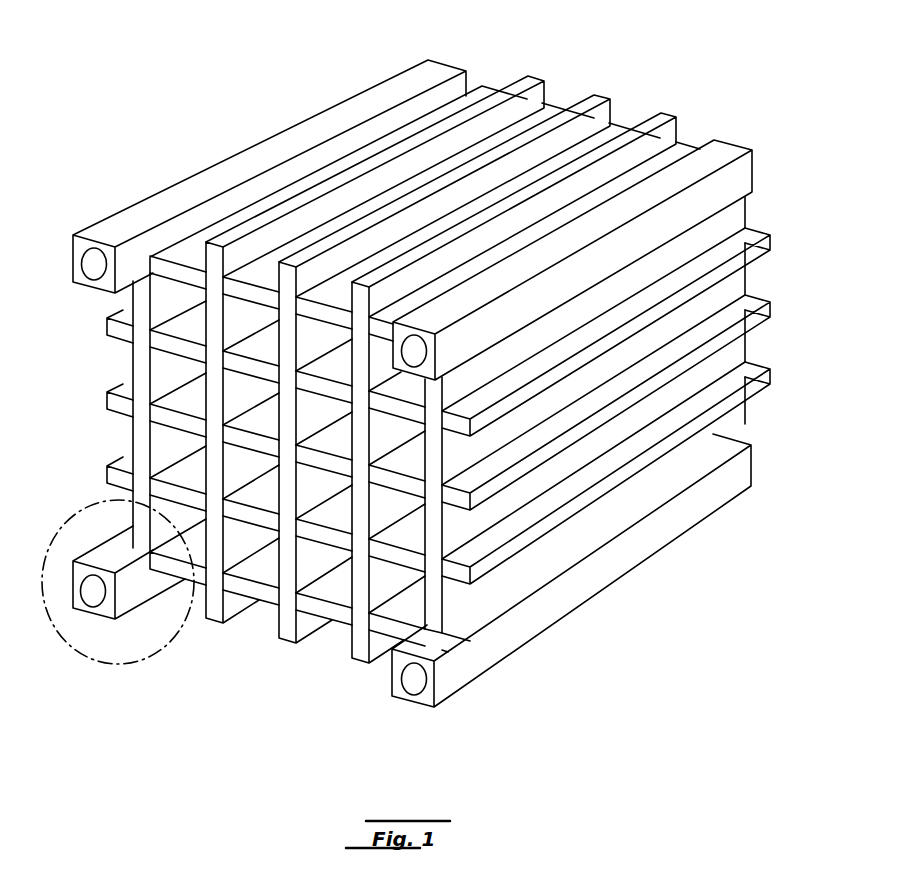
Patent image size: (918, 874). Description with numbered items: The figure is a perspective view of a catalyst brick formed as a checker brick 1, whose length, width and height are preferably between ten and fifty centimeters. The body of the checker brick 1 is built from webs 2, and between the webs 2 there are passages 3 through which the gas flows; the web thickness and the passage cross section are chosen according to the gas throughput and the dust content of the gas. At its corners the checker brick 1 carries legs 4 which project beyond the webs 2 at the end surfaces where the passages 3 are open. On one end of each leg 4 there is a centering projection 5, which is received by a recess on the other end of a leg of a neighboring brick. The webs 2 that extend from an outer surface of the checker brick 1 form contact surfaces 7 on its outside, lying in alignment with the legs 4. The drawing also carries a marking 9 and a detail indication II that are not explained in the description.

The checker brick 1 is at (653, 576).
The webs 2 is at (180, 282).
The passages 3 is at (176, 370).
The legs 4 is at (110, 224).
The centering projection 5 is at (97, 270).
The contact surfaces 7 is at (509, 89).
The junction 9 is at (338, 428).
The detail section II is at (118, 602).